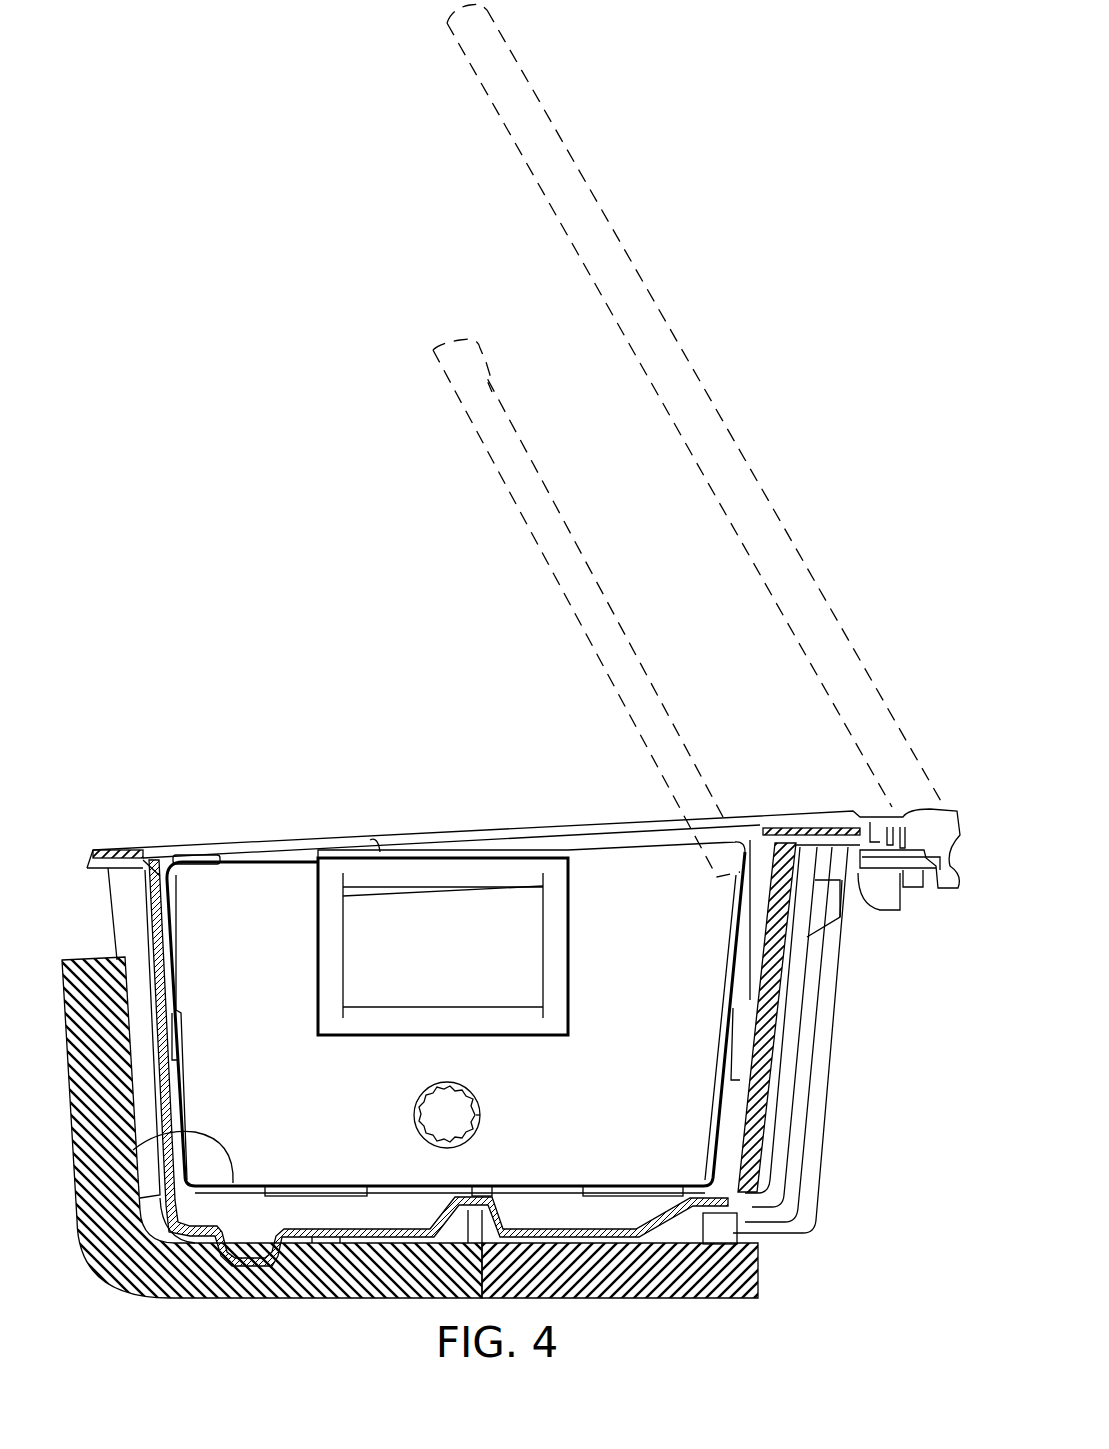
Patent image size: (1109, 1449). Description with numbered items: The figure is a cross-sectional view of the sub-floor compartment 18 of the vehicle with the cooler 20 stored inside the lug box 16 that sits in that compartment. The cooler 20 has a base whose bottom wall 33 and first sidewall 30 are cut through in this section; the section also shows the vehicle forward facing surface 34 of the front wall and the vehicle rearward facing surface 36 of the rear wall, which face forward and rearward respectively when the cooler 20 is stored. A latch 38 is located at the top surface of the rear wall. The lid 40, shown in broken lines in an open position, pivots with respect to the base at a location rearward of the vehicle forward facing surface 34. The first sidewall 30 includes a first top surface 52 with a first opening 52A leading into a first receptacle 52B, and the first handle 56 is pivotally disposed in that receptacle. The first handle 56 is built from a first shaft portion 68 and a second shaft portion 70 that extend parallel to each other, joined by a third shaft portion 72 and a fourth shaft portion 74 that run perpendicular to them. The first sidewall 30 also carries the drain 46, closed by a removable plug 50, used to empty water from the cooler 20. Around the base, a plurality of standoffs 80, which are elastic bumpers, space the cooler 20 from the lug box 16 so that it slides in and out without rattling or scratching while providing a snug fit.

The lug box 16 is at (795, 798).
The sub-floor compartment 18 is at (718, 770).
The cooler 20 is at (467, 810).
The first sidewall 30 is at (197, 915).
The bottom wall 33 is at (133, 1150).
The vehicle forward facing surface 34 is at (735, 990).
The vehicle rearward facing surface 36 is at (165, 943).
The latch 38 is at (193, 860).
The lid 40 is at (365, 893).
The drain 46 is at (497, 1098).
The plug 50 is at (420, 1098).
The first top surface 52 is at (265, 856).
The first opening 52A is at (548, 847).
The first receptacle 52B is at (501, 900).
The first handle 56 is at (393, 838).
The first shaft portion 68 is at (450, 875).
The second shaft portion 70 is at (553, 940).
The third shaft portion 72 is at (330, 940).
The fourth shaft portion 74 is at (455, 1018).
The standoffs 80 is at (175, 1050).